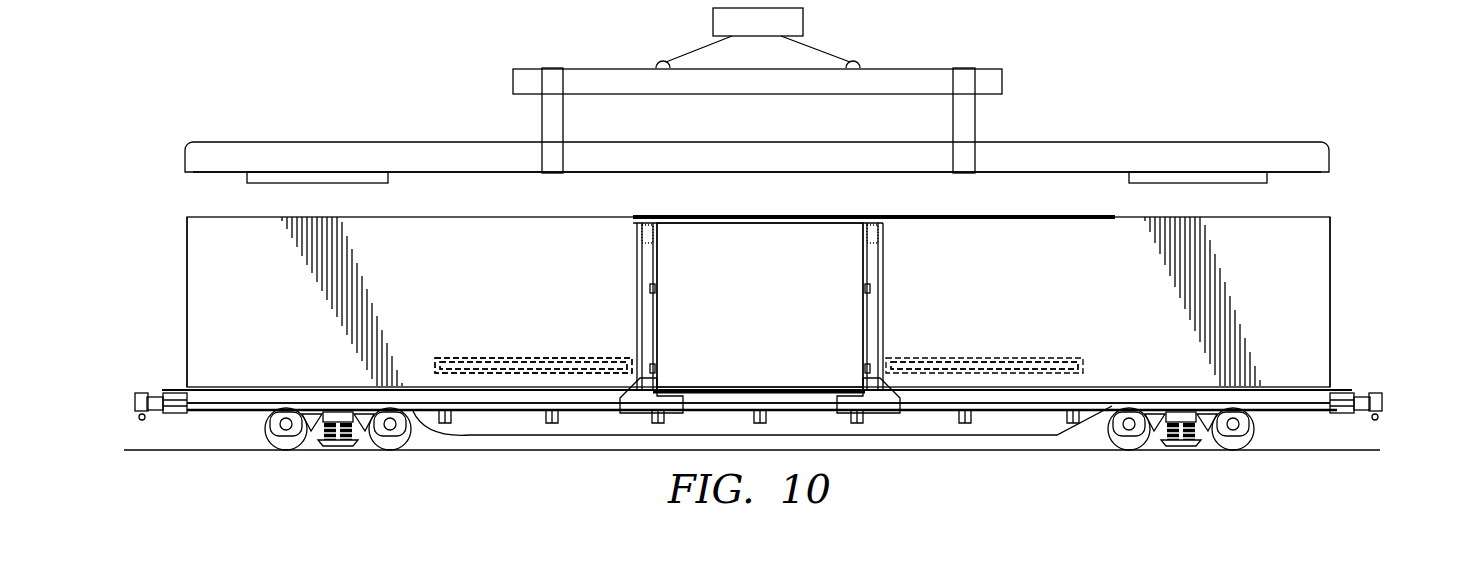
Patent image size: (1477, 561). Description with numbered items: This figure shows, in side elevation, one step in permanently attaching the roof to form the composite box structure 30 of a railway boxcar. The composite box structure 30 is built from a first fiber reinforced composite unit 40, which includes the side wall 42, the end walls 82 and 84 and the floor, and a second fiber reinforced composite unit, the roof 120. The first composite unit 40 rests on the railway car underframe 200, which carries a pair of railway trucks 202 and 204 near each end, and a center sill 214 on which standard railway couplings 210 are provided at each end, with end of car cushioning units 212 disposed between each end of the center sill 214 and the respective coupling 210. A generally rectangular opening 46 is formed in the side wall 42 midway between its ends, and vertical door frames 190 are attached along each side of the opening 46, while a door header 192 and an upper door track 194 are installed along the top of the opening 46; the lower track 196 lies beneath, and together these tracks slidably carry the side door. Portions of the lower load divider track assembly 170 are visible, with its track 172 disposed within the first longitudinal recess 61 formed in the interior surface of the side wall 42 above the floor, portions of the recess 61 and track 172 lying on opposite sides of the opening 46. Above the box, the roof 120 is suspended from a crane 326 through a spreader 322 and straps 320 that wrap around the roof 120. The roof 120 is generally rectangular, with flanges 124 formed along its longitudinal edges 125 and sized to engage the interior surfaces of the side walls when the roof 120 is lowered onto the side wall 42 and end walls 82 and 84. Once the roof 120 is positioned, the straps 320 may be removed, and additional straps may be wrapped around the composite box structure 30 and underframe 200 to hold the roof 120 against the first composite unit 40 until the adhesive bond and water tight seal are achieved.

The composite box structure 30 is at (789, 345).
The first fiber reinforced composite unit 40 is at (1340, 332).
The side wall 42 is at (1160, 345).
The opening 46 is at (769, 330).
The first longitudinal recess 61 is at (598, 358).
The end wall 82 is at (1330, 298).
The end wall 84 is at (187, 330).
The roof 120 is at (1066, 138).
The flange 124 is at (383, 184).
The longitudinal edge 125 is at (775, 168).
The lower load divider track assembly 170 is at (468, 348).
The track 172 is at (515, 362).
The vertical door frame 190 is at (650, 274).
The door header 192 is at (660, 215).
The upper door track 194 is at (1112, 219).
The lower track 196 is at (998, 408).
The railway car underframe 200 is at (611, 440).
The railway truck 202 is at (1182, 447).
The railway truck 204 is at (336, 445).
The railway coupling 210 is at (143, 417).
The end of car cushioning unit 212 is at (170, 413).
The center sill 214 is at (902, 430).
The strap 320 is at (215, 143).
The spreader 322 is at (907, 68).
The crane 326 is at (713, 22).